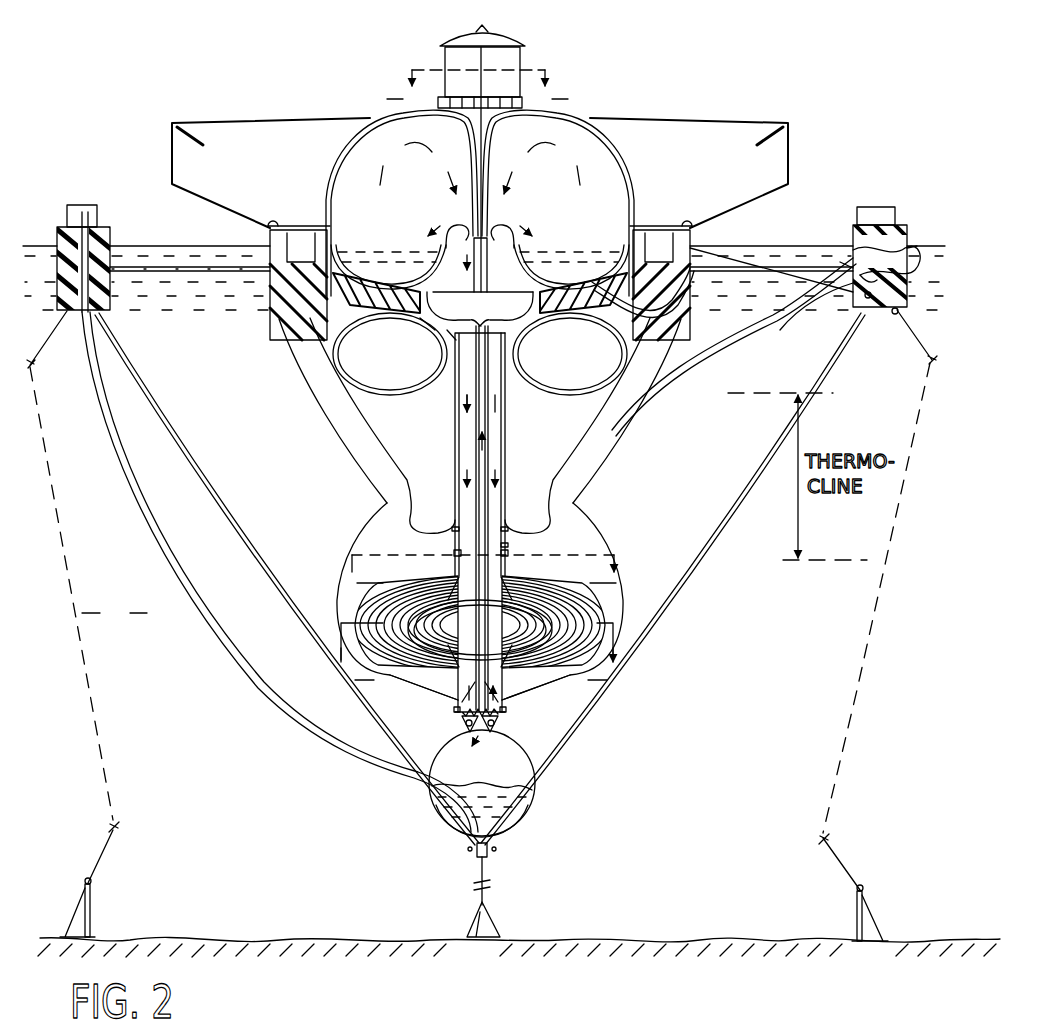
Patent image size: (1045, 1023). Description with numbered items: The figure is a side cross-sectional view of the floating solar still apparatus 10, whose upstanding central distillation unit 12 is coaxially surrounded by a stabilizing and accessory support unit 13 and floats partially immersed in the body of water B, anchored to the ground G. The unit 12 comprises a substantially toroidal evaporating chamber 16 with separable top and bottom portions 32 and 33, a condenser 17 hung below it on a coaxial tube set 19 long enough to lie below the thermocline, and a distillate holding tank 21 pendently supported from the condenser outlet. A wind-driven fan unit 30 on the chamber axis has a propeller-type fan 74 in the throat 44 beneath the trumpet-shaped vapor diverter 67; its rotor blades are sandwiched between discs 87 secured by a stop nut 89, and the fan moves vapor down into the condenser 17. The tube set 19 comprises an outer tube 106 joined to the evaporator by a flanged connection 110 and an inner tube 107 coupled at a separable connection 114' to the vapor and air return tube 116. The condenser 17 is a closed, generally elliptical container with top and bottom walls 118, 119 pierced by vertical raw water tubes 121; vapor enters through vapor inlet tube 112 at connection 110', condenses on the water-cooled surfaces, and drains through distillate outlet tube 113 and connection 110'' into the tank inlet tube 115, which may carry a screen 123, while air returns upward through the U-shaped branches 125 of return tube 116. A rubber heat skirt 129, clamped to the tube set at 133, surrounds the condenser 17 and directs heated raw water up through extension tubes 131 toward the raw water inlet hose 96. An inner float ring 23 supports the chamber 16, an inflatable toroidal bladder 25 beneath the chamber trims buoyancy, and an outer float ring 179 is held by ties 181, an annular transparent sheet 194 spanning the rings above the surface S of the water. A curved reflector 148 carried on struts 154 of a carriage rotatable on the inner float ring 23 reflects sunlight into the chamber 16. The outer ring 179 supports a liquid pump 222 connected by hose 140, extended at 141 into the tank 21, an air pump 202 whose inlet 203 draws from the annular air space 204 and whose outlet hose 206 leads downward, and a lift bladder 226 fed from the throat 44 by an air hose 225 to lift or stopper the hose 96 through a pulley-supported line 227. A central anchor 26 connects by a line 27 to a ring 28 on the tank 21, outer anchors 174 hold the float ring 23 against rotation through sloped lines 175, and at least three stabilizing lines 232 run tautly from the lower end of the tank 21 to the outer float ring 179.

The stop nut 89 is at (483, 30).
The upper and lower discs 87 is at (526, 44).
The fan unit 30 is at (437, 63).
The central distillation unit 12 is at (572, 107).
The evaporator top portion 32 is at (624, 148).
The evaporating chamber 16 is at (640, 178).
The vapor diverter 67 is at (490, 120).
The reflector 148 is at (270, 114).
The strut 154 is at (196, 143).
The stabilizing and accessory support unit 13 is at (130, 197).
The sea surface S is at (50, 246).
The annular transparent sheet 194 is at (112, 246).
The ties 181 is at (792, 268).
The liquid pump 222 is at (72, 205).
The outer float ring 179 is at (110, 297).
The inner float ring 23 is at (268, 292).
The propeller-type fan 74 is at (498, 308).
The inflatable toroidal bladder 25 is at (480, 350).
The evaporator bottom portion 33 is at (390, 354).
The throat 44 is at (433, 333).
The raw water inlet hose 96 is at (603, 331).
The lines 175 is at (895, 315).
The inflatable lift bladder 226 is at (885, 250).
The air pump 202 is at (868, 250).
The inlet 203 is at (850, 237).
The annular air space 204 is at (853, 247).
The outlet hose 206 is at (913, 233).
The pulley supported line 227 is at (705, 277).
The air hose 225 is at (772, 333).
The extension tube 131 is at (305, 420).
The flanged connection 110 is at (464, 454).
The inner tube 107 is at (490, 490).
The outer tube 106 is at (502, 492).
The coaxial tube set 19 is at (505, 445).
The separable connection 114' is at (528, 519).
The clamp 133 is at (453, 527).
The vapor and air return tube 116 is at (462, 554).
The condenser vapor inlet tube 112 is at (508, 556).
The releasable sealed connection 110' is at (544, 542).
The heat skirt 129 is at (356, 540).
The condenser 17 is at (612, 603).
The top wall 118 is at (606, 597).
The U-shaped branches 125 is at (560, 619).
The bottom wall 119 is at (605, 647).
The raw water tubes 121 is at (583, 668).
The distillate outlet tube 113 is at (506, 697).
The releasable sealed connection 110'' is at (430, 713).
The tank inlet tube 115 is at (506, 716).
The screen 123 is at (460, 725).
The distillate holding tank 21 is at (482, 783).
The hose extension 141 is at (455, 820).
The hose 140 is at (333, 757).
The stabilizing lines 232 is at (217, 497).
The floating solar still apparatus 10 is at (258, 708).
The body of water B is at (506, 603).
The ring 28 is at (490, 850).
The line 27 is at (490, 887).
The central anchor 26 is at (495, 922).
The ground engaging anchors 174 is at (92, 905).
The ground G is at (286, 937).